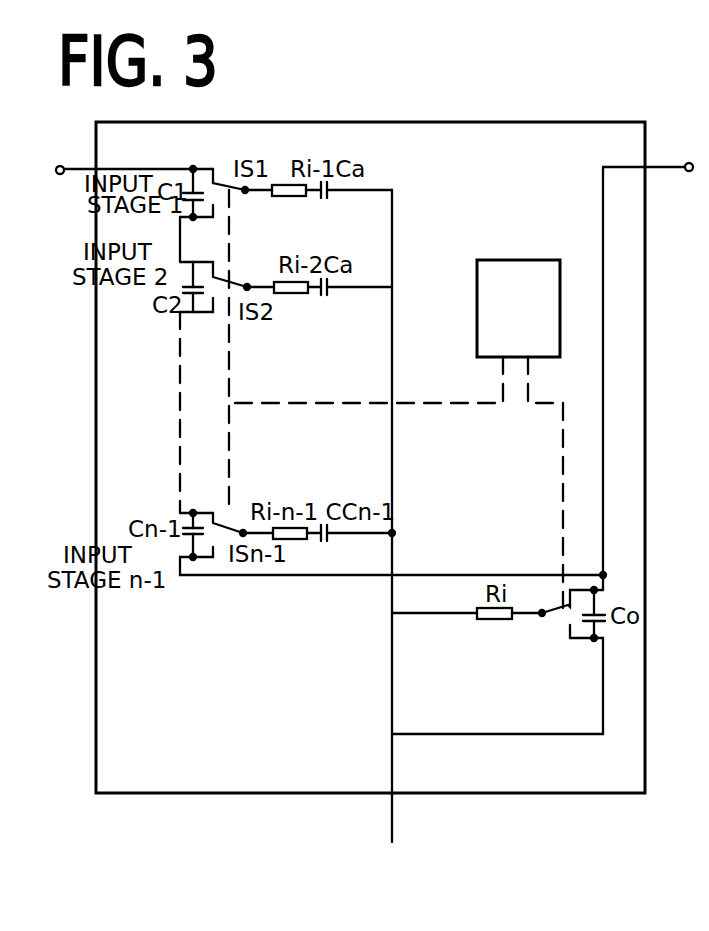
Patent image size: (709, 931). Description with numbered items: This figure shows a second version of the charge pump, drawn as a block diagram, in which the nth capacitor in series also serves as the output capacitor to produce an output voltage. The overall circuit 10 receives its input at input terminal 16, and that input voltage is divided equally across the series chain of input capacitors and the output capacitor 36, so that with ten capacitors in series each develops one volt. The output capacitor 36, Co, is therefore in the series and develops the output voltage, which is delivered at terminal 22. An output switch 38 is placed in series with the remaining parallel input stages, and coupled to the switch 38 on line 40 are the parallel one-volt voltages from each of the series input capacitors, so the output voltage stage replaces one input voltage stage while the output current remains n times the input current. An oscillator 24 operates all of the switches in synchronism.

The sensing circuit enclosure 10 is at (432, 122).
The input terminal 16 is at (67, 156).
The output terminal 22 is at (686, 162).
The oscillator 24 is at (505, 260).
The output capacitor 36 is at (598, 626).
The output switch 38 is at (558, 618).
The line 40 is at (392, 483).